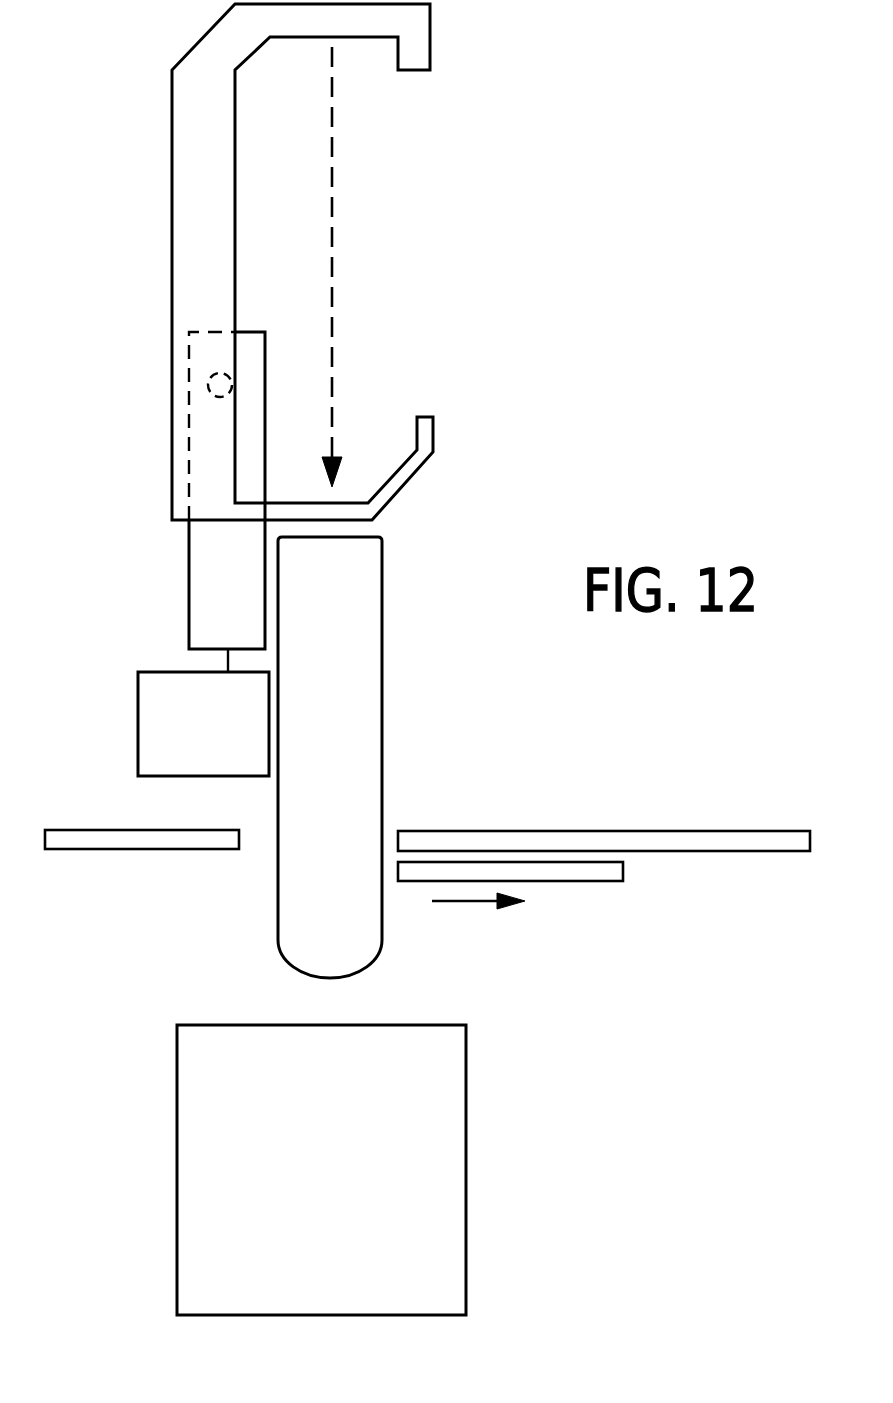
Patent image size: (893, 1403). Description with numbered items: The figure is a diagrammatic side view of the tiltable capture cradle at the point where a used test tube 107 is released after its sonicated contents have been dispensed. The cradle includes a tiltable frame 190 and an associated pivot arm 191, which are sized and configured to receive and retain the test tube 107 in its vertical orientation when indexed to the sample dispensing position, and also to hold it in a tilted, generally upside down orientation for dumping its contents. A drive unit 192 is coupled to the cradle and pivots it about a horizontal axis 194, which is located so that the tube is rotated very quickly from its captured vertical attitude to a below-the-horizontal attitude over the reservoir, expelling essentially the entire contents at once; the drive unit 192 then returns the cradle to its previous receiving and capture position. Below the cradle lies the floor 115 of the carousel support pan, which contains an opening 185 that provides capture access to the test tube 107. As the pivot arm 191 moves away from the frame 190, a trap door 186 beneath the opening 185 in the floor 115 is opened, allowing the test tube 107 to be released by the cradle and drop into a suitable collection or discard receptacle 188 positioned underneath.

The tiltable frame 190 is at (430, 37).
The pivot arm 191 is at (189, 583).
The horizontal axis 194 is at (211, 374).
The drive unit 192 is at (183, 761).
The test tube 107 is at (383, 753).
The opening 185 is at (196, 850).
The floor 115 is at (615, 832).
The trap door 186 is at (623, 875).
The discard receptacle 188 is at (301, 1197).